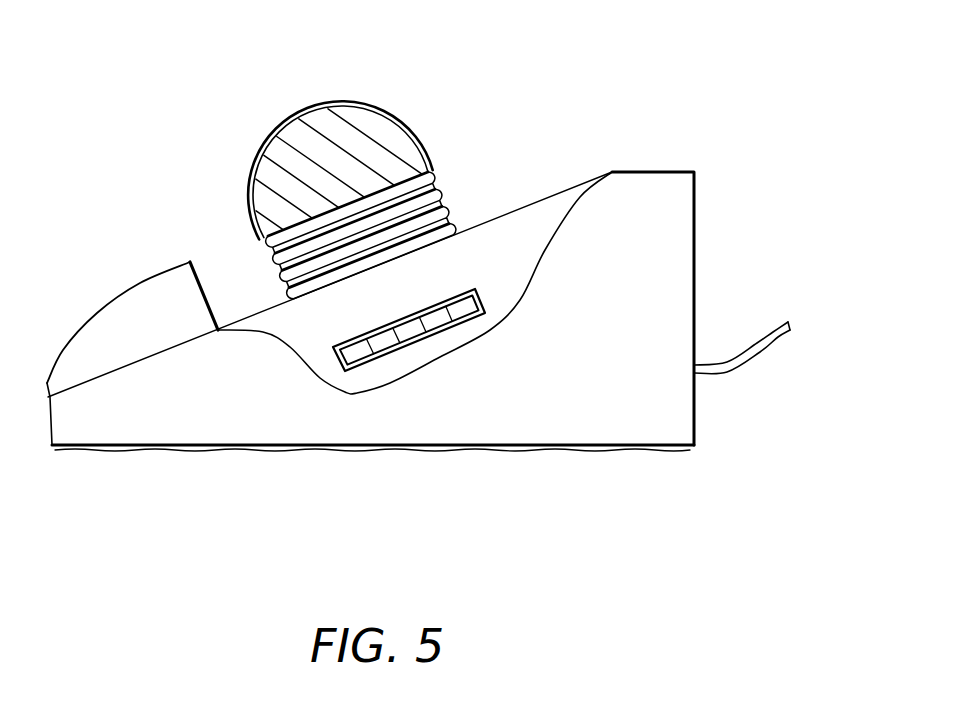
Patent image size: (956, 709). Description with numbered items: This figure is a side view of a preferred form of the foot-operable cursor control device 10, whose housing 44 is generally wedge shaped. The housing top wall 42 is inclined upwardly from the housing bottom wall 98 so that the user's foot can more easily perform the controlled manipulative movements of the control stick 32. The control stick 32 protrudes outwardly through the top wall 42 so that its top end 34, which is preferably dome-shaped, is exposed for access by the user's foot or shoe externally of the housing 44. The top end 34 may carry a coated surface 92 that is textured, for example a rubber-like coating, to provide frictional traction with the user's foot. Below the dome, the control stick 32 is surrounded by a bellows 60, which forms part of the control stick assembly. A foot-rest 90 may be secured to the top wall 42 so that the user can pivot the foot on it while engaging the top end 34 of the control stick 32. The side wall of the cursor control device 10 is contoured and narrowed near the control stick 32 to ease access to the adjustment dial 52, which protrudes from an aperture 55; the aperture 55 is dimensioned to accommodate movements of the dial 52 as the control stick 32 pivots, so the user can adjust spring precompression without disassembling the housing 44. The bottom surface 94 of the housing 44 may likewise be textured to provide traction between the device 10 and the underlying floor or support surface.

The foot-operable cursor control device 10 is at (638, 117).
The control stick 32 is at (366, 84).
The top end 34 is at (417, 133).
The top wall 42 is at (552, 195).
The housing 44 is at (678, 170).
The adjustment dial 52 is at (333, 347).
The aperture 55 is at (483, 306).
The bellows 60 is at (433, 197).
The foot-rest 90 is at (122, 293).
The coated surface 92 is at (283, 120).
The bottom surface 94 is at (660, 450).
The bottom wall 98 is at (463, 445).